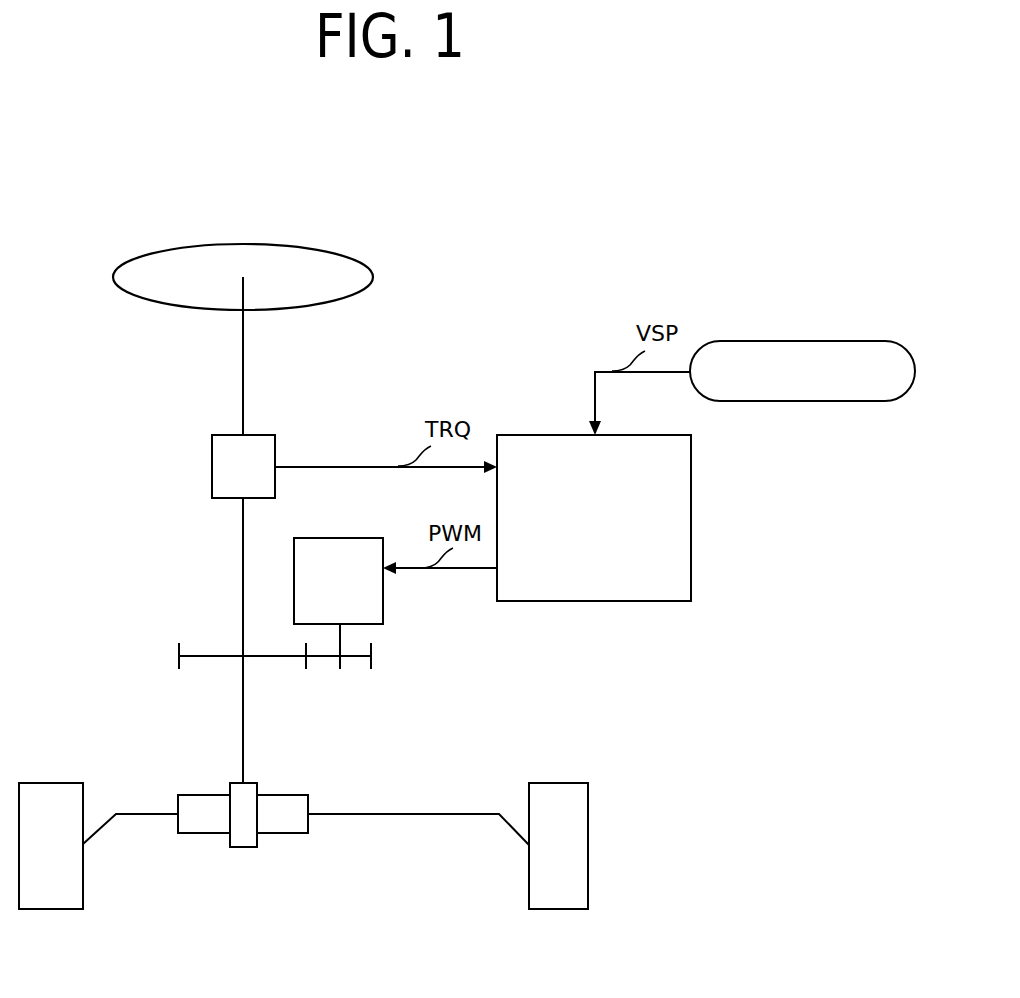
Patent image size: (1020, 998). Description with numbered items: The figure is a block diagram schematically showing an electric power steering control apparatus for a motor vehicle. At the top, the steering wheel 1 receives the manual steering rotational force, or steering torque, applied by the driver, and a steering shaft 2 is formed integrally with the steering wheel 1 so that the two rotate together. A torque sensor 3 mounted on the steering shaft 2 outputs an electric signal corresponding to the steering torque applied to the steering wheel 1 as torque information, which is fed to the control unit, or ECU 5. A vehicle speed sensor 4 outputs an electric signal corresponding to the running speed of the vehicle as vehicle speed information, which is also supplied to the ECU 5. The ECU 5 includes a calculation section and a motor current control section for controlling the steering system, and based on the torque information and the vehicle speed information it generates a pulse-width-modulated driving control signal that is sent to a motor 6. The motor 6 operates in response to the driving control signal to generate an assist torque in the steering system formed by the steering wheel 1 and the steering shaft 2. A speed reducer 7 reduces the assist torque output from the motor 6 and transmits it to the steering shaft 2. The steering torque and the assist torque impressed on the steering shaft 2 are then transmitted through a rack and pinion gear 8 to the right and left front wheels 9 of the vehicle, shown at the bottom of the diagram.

The steering wheel 1 is at (322, 250).
The steering shaft 2 is at (243, 378).
The torque sensor 3 is at (275, 443).
The vehicle speed sensor 4 is at (757, 341).
The control unit (ECU) 5 is at (691, 494).
The motor 6 is at (383, 606).
The speed reducer 7 is at (275, 656).
The rack and pinion gear 8 is at (280, 795).
The front wheels 9 is at (55, 783).